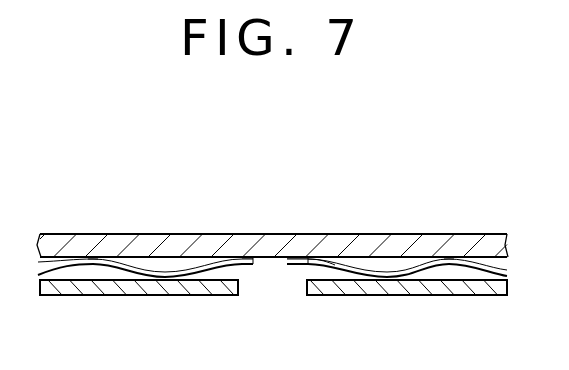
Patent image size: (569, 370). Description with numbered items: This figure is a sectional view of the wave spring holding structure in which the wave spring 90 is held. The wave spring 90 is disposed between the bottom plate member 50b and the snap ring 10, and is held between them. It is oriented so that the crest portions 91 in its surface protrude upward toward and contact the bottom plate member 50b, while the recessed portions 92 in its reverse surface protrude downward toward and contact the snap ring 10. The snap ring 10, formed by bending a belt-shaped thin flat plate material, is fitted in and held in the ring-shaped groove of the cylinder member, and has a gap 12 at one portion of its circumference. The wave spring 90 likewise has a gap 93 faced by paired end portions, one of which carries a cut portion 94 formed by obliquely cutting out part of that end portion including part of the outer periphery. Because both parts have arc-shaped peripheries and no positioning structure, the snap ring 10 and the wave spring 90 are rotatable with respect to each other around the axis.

The snap ring 10 is at (468, 291).
The gap 12 is at (274, 291).
The bottom plate member 50b is at (489, 250).
The wave spring 90 is at (347, 262).
The crest portions 91 is at (449, 259).
The recessed portions 92 is at (386, 275).
The gap 93 is at (268, 258).
The cut portion 94 is at (312, 260).